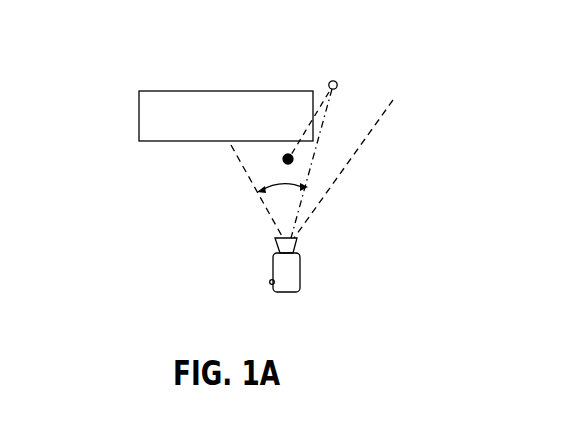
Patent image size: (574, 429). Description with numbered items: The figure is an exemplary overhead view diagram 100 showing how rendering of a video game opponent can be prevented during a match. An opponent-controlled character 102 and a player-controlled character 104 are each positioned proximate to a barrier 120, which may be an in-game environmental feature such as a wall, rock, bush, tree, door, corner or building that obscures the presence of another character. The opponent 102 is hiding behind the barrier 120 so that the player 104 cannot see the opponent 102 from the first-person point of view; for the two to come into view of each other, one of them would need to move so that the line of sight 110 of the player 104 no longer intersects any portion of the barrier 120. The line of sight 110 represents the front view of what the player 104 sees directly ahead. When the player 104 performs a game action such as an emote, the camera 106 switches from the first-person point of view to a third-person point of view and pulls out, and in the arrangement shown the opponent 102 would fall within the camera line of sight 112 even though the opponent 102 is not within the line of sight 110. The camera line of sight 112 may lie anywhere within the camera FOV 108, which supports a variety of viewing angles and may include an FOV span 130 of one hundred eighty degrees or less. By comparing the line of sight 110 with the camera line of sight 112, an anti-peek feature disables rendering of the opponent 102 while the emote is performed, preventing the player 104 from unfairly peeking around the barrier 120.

The overhead view diagram 100 is at (133, 48).
The barrier 120 is at (248, 128).
The line of sight 110 is at (313, 122).
The opponent-controlled character 102 is at (336, 80).
The player-controlled character 104 is at (284, 160).
The camera 106 is at (300, 272).
The camera FOV 108 is at (376, 119).
The camera line of sight 112 is at (327, 123).
The FOV span 130 is at (281, 189).